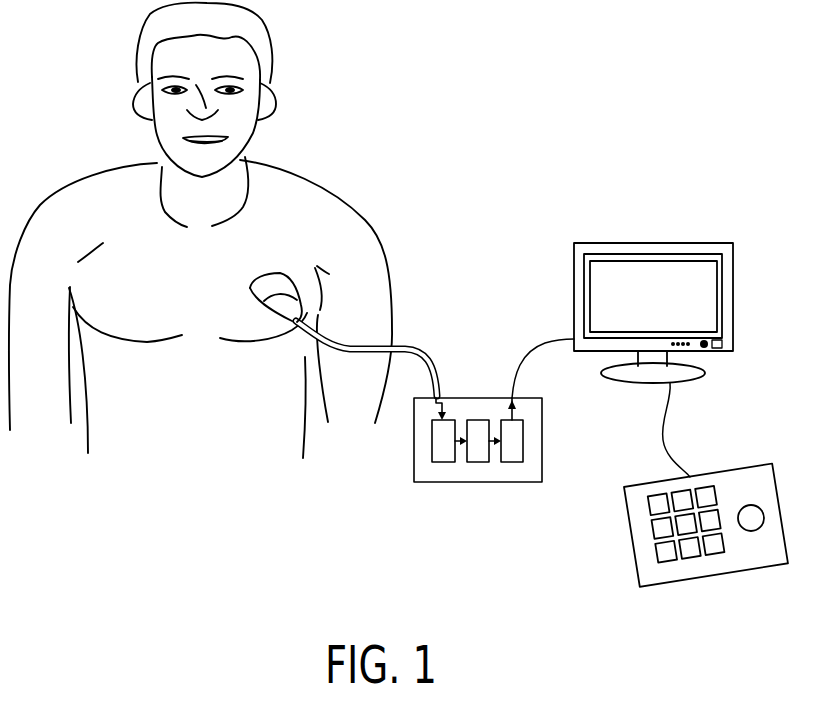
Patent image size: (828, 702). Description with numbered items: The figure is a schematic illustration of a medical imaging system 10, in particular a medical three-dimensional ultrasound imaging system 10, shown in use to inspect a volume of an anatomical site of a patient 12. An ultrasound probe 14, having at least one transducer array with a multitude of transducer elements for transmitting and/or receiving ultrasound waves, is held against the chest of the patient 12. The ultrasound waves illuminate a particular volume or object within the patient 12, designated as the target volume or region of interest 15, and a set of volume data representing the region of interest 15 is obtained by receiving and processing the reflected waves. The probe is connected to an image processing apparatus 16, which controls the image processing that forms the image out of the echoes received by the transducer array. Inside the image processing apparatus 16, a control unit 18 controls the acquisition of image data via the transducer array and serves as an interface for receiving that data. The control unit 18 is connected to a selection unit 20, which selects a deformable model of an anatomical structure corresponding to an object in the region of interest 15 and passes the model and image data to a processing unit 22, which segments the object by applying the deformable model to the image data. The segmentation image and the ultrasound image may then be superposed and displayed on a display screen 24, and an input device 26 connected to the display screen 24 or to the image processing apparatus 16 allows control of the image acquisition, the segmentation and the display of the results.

The medical imaging system 10 is at (617, 100).
The patient 12 is at (345, 203).
The ultrasound probe 14 is at (281, 276).
The region of interest 15 is at (297, 277).
The image processing apparatus 16 is at (504, 473).
The control unit 18 is at (445, 463).
The selection unit 20 is at (473, 463).
The processing unit 22 is at (513, 463).
The display screen 24 is at (645, 242).
The input device 26 is at (700, 590).